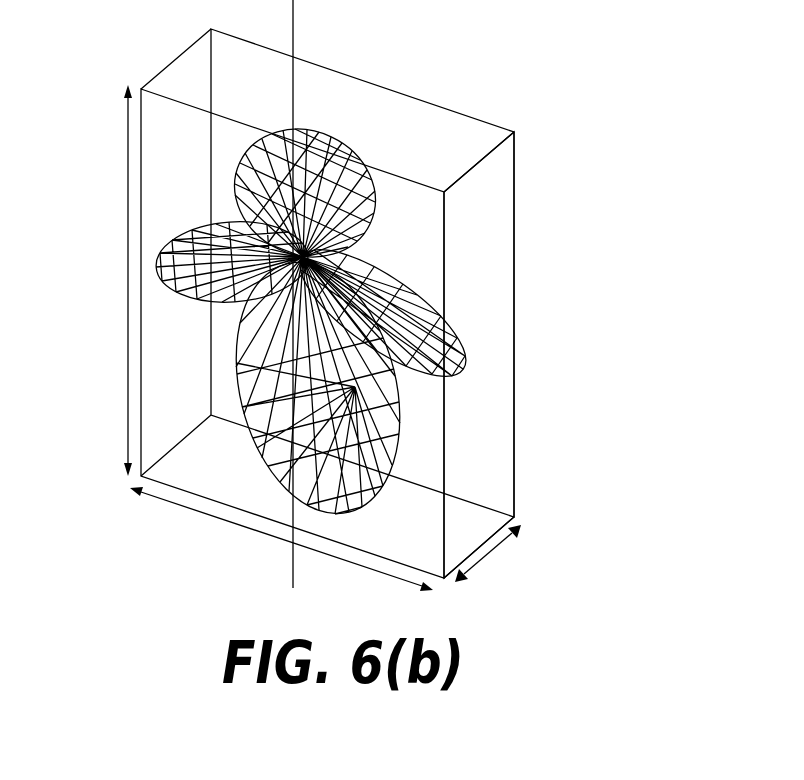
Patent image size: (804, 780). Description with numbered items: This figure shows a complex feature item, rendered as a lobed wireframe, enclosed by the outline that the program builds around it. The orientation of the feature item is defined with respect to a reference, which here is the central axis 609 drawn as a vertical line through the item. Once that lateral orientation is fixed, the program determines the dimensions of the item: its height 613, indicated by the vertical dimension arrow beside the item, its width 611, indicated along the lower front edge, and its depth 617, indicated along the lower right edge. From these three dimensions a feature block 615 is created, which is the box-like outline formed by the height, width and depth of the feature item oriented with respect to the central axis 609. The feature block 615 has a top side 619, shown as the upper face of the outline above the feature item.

The central axis 609 is at (293, 20).
The width 611 is at (283, 543).
The height 613 is at (127, 270).
The feature block 615 is at (485, 432).
The depth 617 is at (490, 555).
The top side 619 is at (450, 126).